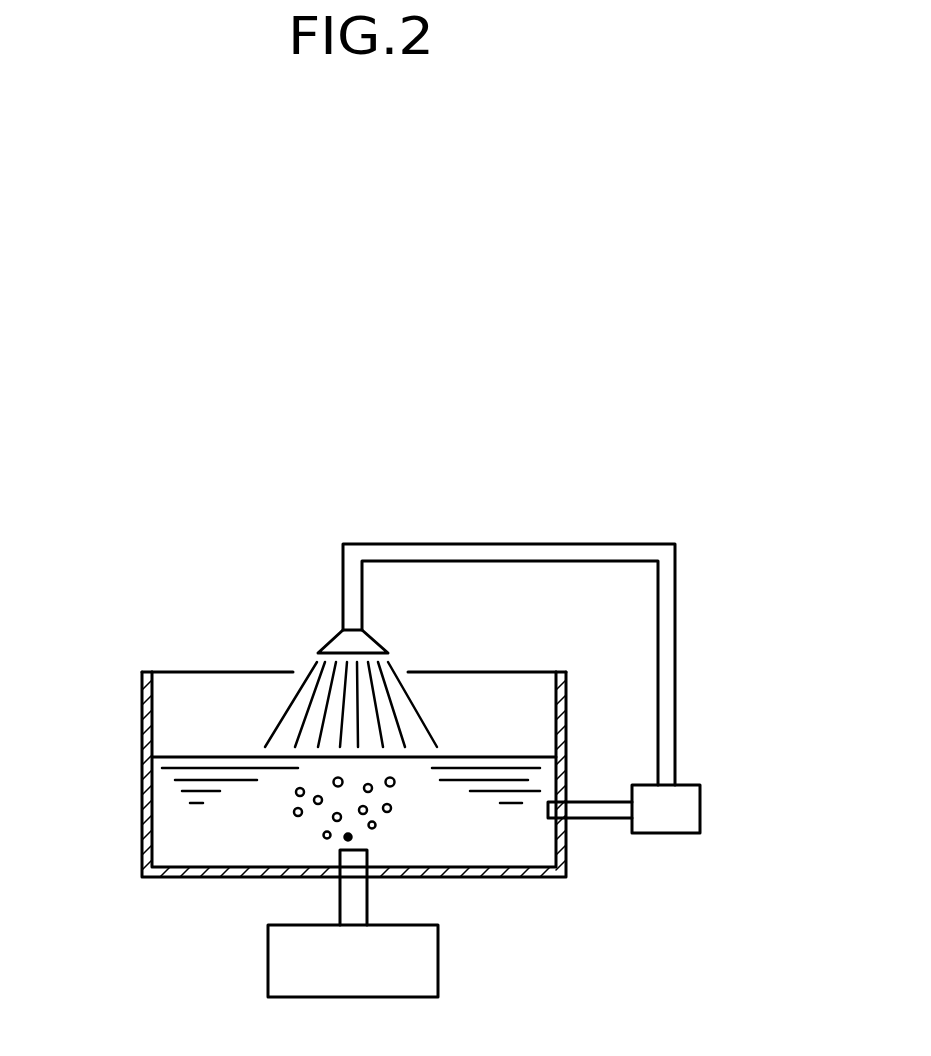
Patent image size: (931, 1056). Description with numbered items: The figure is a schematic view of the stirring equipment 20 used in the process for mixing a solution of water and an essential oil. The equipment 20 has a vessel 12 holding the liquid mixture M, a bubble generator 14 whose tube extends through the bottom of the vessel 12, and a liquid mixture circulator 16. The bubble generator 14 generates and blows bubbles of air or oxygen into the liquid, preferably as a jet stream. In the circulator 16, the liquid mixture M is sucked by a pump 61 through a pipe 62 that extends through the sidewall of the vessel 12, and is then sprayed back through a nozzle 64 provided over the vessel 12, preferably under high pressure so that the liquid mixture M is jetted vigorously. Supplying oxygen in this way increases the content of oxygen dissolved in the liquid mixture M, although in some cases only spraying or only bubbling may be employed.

The equipment 20 is at (180, 533).
The stirring vessel 12 is at (142, 700).
The liquid mixture M is at (175, 828).
The nozzle 64 is at (332, 642).
The liquid mixture circulator 16 is at (700, 587).
The pump 61 is at (700, 808).
The pipe 62 is at (598, 819).
The bubble generator 14 is at (438, 968).